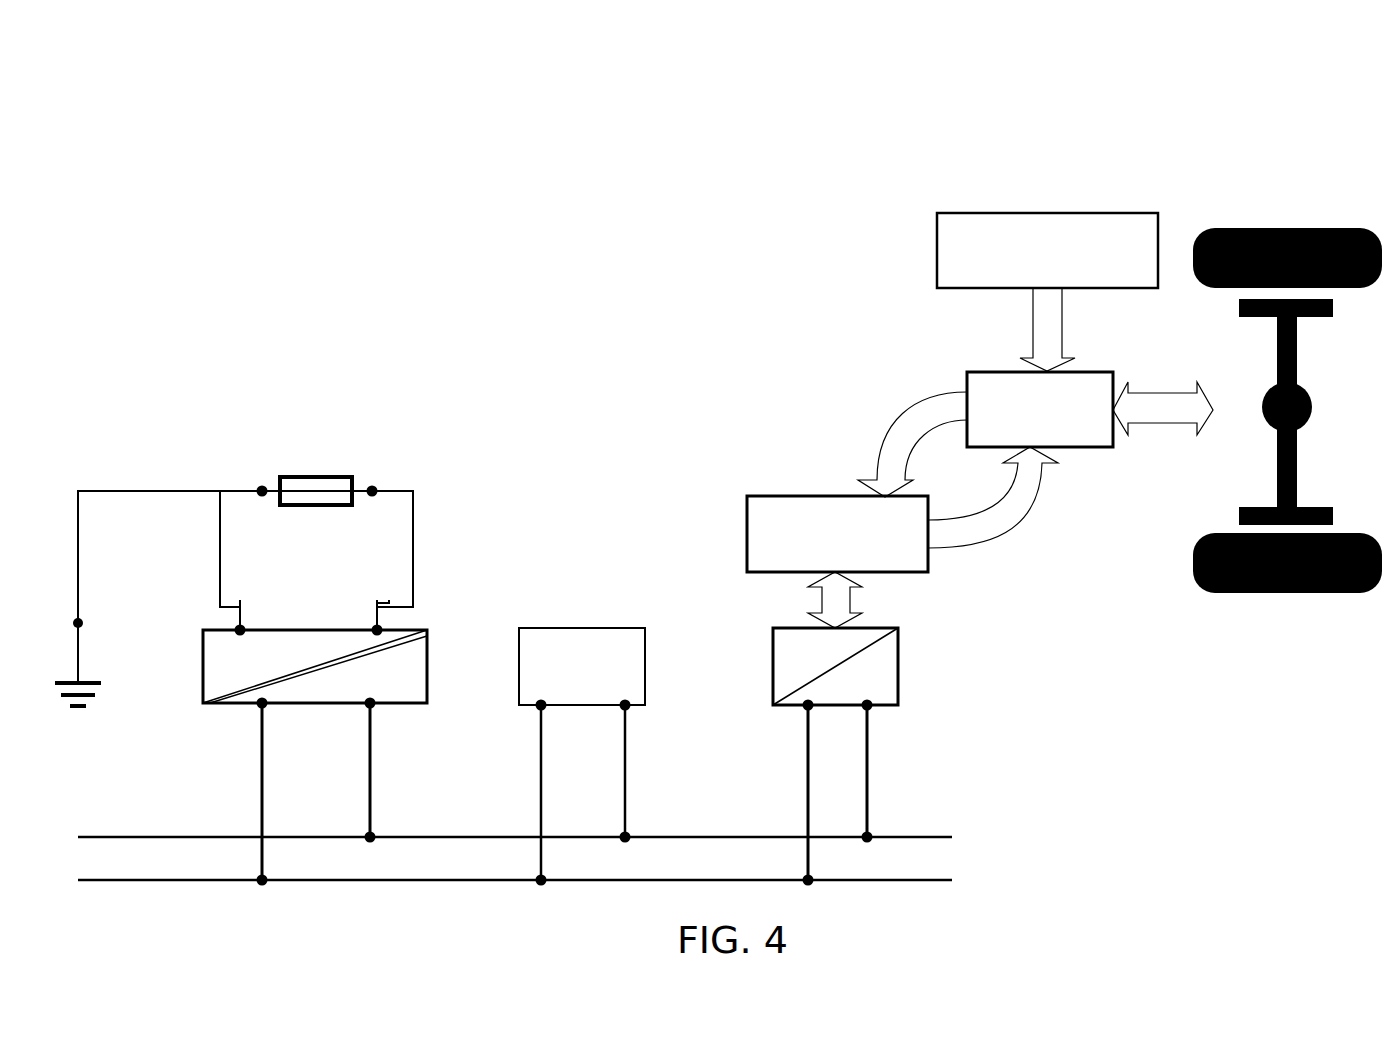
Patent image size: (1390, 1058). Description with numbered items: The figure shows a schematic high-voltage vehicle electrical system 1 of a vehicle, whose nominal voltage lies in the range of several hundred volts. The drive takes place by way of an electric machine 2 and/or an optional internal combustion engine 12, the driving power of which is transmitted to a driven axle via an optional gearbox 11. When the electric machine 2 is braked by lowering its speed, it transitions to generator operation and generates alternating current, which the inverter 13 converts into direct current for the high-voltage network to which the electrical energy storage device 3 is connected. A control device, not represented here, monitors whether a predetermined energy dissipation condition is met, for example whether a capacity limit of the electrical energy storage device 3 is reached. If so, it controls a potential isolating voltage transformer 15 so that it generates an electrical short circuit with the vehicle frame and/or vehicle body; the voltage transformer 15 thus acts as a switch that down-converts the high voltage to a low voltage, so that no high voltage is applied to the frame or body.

The hybrid vehicle drive arrangement 1 is at (500, 150).
The electric machine 2 is at (832, 497).
The electrical energy storage device 3 is at (587, 628).
The gearbox 11 is at (1077, 447).
The internal combustion engine 12 is at (1063, 218).
The inverter 13 is at (900, 643).
The potential isolating voltage transformer 15 is at (427, 608).